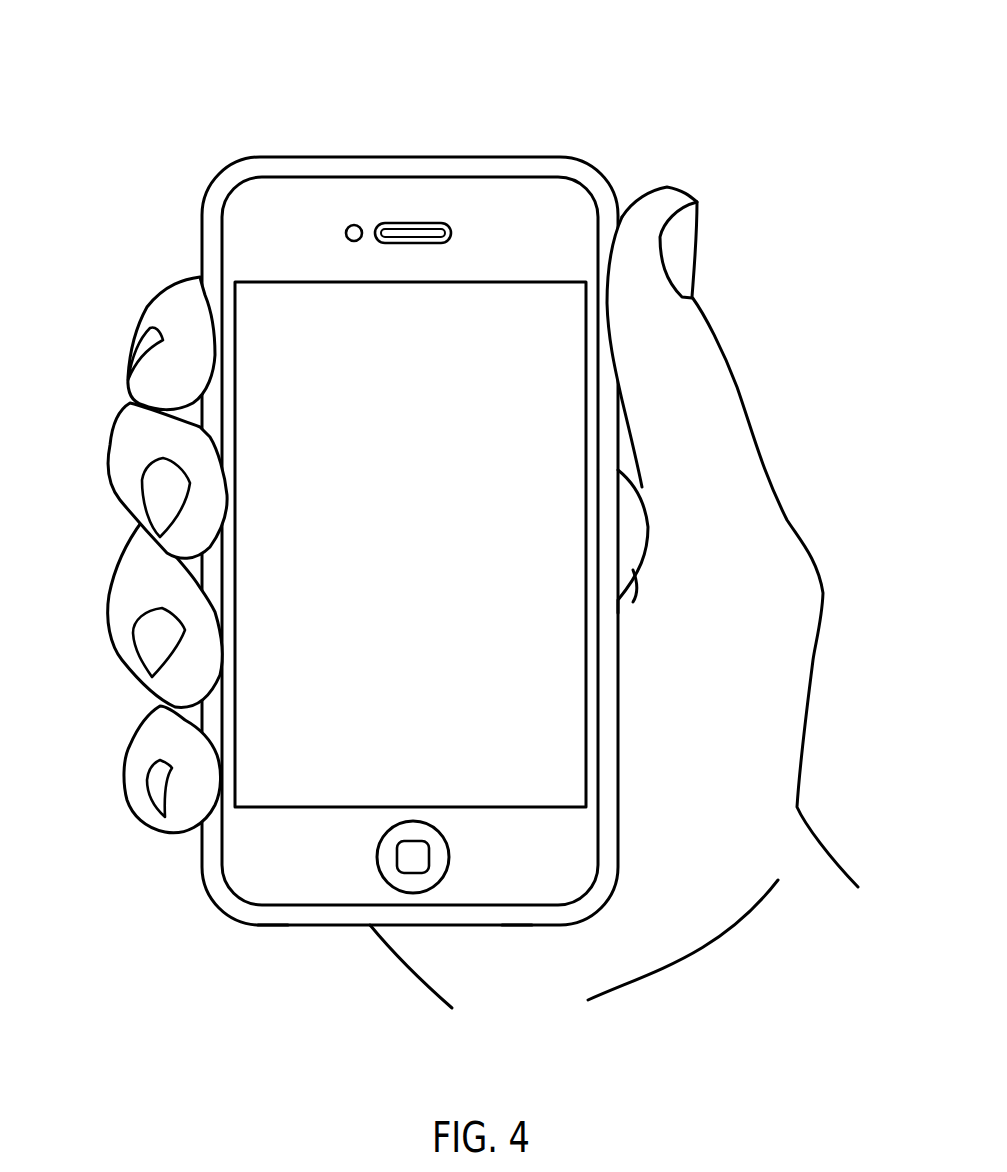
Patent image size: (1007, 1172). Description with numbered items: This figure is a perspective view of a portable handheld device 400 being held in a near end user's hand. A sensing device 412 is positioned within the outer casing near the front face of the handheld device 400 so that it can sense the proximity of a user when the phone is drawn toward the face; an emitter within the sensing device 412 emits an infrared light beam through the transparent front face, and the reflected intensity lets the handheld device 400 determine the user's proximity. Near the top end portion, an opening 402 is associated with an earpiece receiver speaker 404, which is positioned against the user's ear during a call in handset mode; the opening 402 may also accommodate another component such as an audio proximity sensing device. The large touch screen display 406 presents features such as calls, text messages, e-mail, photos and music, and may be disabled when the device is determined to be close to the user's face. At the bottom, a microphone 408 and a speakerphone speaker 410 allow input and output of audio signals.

The handheld device 400 is at (563, 157).
The opening 402 is at (397, 222).
The earpiece receiver speaker 404 is at (413, 233).
The touch screen display 406 is at (493, 315).
The microphone 408 is at (517, 927).
The speakerphone speaker 410 is at (273, 927).
The sensing device 412 is at (347, 227).